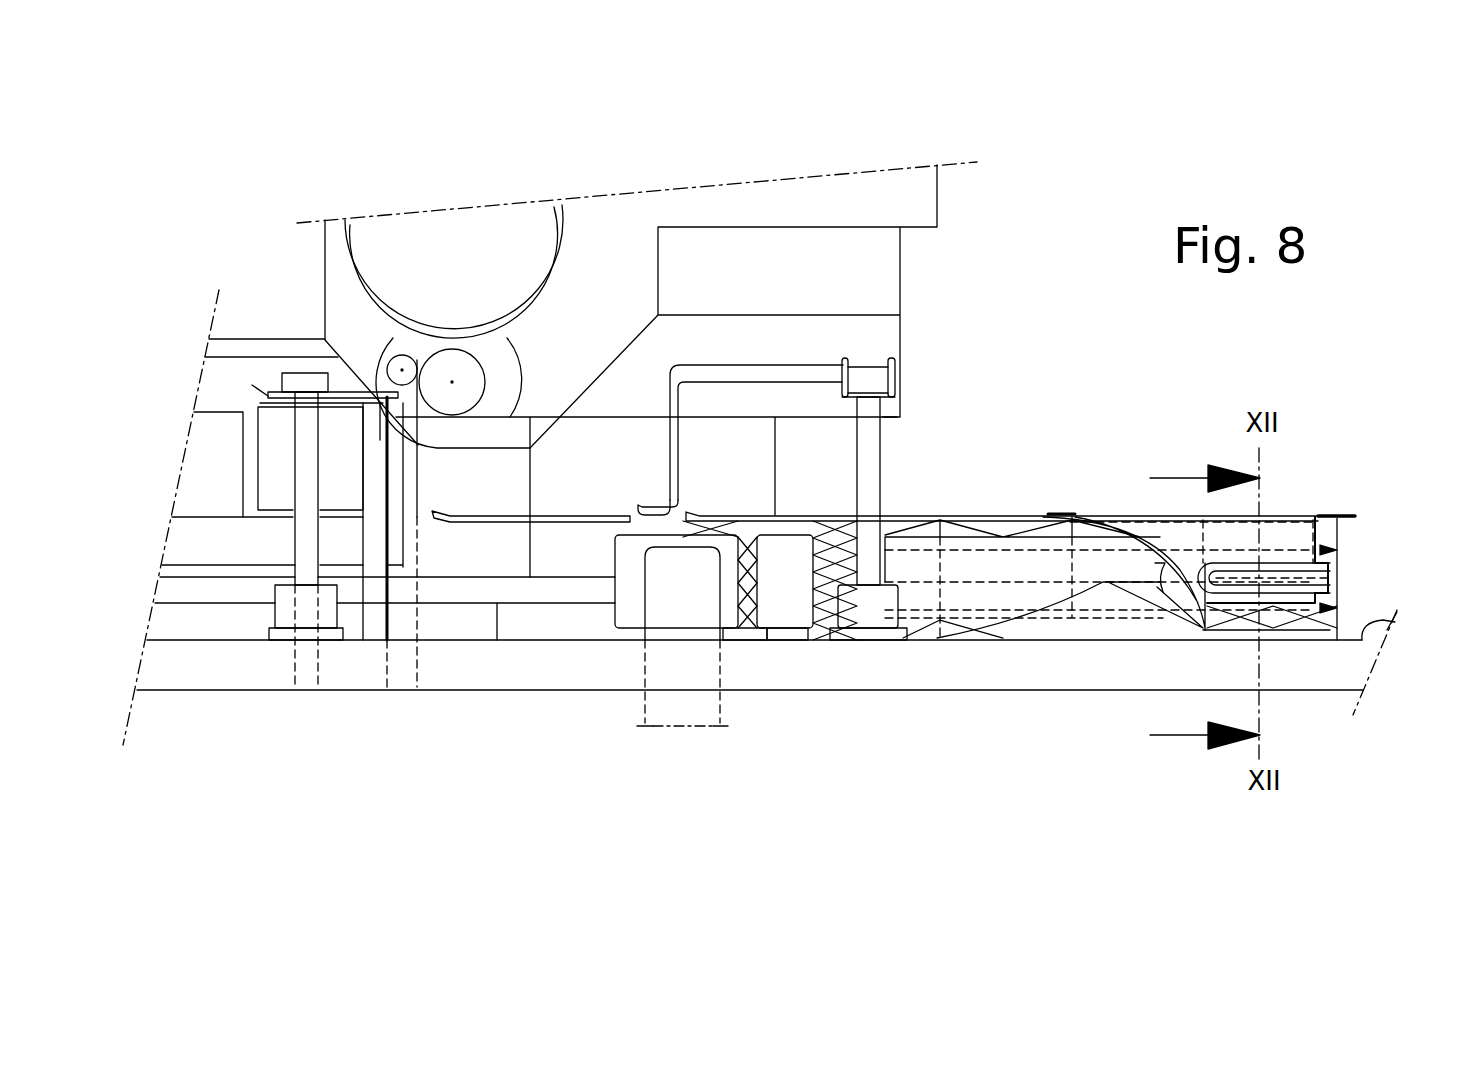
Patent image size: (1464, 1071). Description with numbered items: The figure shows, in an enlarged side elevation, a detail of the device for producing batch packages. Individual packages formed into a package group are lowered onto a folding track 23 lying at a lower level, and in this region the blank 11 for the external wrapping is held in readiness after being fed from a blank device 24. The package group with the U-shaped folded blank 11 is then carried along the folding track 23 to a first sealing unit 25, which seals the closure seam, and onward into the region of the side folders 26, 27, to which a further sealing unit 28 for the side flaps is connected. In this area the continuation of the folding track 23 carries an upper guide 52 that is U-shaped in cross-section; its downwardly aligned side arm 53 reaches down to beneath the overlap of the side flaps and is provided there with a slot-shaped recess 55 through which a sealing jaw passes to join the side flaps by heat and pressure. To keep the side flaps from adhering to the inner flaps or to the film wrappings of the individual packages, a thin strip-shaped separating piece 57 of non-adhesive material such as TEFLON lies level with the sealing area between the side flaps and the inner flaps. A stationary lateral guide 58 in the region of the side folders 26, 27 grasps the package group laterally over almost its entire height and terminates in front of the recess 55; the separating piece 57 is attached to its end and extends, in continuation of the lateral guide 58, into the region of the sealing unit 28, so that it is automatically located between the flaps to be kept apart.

The blank 11 is at (387, 487).
The folding track 23 is at (523, 640).
The blank device 24 is at (845, 158).
The first sealing unit 25 is at (735, 658).
The side folder 26 is at (1110, 517).
The side folder 27 is at (1110, 622).
The further sealing unit 28 is at (1340, 497).
The upper guide 52 is at (1290, 513).
The side arm 53 is at (1297, 537).
The slot-shaped recess 55 is at (1273, 590).
The separating piece 57 is at (1167, 590).
The lateral guide 58 is at (975, 547).